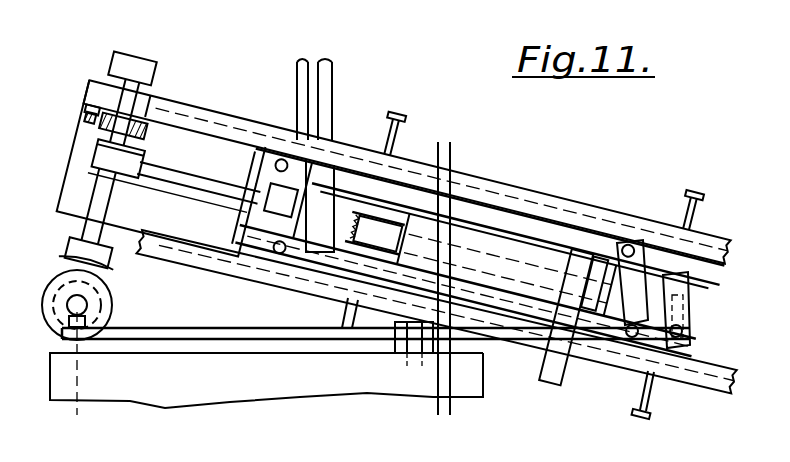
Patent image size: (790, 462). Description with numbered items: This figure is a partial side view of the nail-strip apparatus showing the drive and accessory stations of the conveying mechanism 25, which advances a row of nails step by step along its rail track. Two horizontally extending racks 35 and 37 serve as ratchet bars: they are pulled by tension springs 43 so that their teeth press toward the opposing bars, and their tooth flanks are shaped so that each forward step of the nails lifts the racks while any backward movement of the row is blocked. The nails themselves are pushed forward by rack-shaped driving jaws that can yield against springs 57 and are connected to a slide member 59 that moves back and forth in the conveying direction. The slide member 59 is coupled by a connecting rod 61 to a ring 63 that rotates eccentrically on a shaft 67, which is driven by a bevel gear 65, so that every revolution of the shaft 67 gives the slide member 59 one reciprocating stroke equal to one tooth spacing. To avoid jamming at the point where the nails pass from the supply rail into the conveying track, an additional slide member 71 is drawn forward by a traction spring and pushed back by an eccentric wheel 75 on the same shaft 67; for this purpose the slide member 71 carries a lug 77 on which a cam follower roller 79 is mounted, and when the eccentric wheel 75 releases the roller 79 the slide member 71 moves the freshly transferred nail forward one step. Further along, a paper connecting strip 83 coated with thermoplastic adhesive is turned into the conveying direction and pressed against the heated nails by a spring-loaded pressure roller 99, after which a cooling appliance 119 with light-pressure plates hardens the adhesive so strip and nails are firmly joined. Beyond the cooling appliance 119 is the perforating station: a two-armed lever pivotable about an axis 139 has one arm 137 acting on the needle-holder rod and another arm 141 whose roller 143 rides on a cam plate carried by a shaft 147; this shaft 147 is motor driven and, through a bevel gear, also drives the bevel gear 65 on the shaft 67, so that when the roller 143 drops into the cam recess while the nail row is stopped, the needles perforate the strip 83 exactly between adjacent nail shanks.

The conveying mechanism 25 is at (467, 149).
The rack 35 is at (495, 183).
The rack 37 is at (600, 350).
The spring 43 is at (400, 115).
The spring 57 is at (282, 157).
The slide member 59 is at (497, 293).
The connecting rod 61 is at (188, 172).
The ring 63 is at (100, 155).
The bevel gear 65 is at (105, 268).
The shaft 67 is at (102, 200).
The slide member 71 is at (152, 105).
The eccentric wheel 75 is at (133, 58).
The lug 77 is at (95, 80).
The cam follower roller 79 is at (85, 118).
The connecting strip 83 is at (352, 217).
The pressure roller 99 is at (359, 243).
The cooling appliance 119 is at (545, 253).
The arm 137 is at (522, 340).
The axis 139 is at (405, 363).
The arm 141 is at (192, 337).
The roller 143 is at (88, 378).
The shaft 147 is at (87, 304).